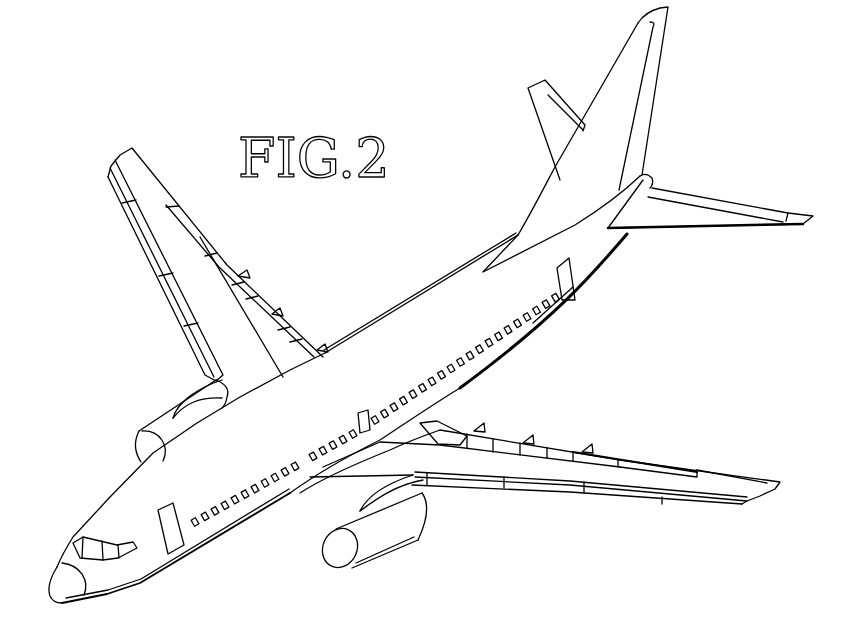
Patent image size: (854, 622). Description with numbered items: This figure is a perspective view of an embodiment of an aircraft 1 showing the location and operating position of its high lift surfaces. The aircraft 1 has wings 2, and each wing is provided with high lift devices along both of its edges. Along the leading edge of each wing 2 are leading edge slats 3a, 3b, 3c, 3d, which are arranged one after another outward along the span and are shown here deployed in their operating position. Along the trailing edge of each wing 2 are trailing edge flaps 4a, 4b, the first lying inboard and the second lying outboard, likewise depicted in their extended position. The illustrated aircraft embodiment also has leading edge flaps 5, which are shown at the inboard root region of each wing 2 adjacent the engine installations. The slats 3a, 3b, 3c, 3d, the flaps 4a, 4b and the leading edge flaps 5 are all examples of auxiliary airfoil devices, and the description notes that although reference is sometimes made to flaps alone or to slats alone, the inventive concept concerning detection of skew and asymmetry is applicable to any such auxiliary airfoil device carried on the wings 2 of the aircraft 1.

The aircraft 1 is at (488, 236).
The wings 2 is at (228, 322).
The leading edge slat 3a is at (198, 361).
The leading edge slat 3b is at (170, 308).
The leading edge slat 3c is at (141, 255).
The leading edge slat 3d is at (121, 204).
The trailing edge flap 4a is at (463, 417).
The trailing edge flap 4b is at (567, 448).
The leading edge flaps 5 is at (222, 398).